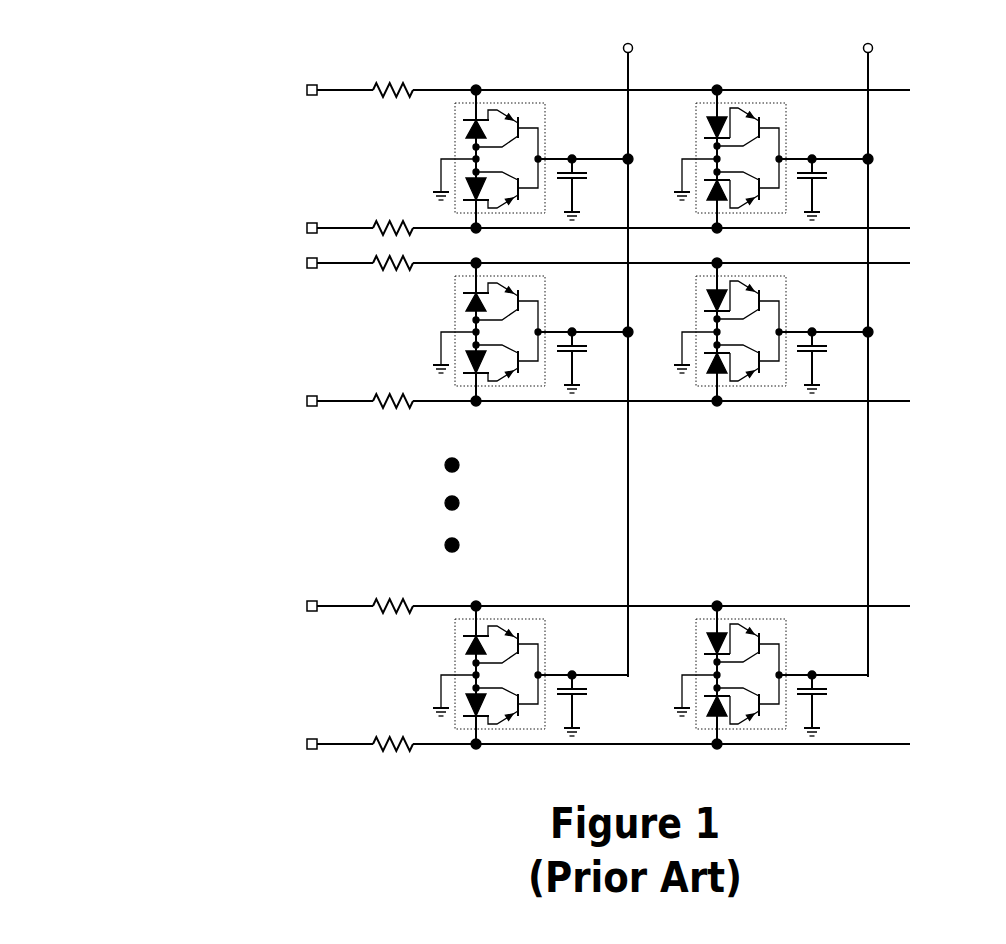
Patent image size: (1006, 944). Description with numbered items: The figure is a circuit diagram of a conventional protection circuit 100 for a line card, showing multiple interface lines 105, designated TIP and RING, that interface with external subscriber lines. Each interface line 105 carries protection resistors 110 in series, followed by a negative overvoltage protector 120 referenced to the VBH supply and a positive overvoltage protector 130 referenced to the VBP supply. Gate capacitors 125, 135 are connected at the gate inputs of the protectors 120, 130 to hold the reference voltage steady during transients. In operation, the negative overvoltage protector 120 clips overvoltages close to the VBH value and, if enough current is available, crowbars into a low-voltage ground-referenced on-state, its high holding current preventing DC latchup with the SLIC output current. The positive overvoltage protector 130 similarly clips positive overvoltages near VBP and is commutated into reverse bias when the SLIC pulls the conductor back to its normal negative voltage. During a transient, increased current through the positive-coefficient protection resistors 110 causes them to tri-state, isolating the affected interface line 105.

The protection circuit 100 is at (94, 108).
The interface line 105 is at (179, 313).
The protection resistors 110 is at (387, 96).
The negative overvoltage protector 120 is at (559, 134).
The gate capacitor 125 is at (587, 180).
The positive overvoltage protector 130 is at (801, 136).
The gate capacitor 135 is at (827, 180).